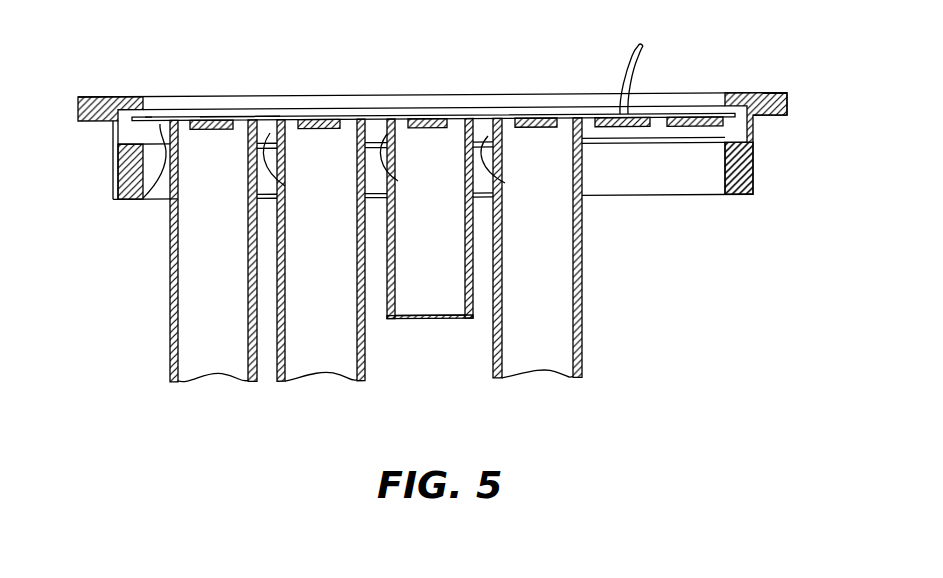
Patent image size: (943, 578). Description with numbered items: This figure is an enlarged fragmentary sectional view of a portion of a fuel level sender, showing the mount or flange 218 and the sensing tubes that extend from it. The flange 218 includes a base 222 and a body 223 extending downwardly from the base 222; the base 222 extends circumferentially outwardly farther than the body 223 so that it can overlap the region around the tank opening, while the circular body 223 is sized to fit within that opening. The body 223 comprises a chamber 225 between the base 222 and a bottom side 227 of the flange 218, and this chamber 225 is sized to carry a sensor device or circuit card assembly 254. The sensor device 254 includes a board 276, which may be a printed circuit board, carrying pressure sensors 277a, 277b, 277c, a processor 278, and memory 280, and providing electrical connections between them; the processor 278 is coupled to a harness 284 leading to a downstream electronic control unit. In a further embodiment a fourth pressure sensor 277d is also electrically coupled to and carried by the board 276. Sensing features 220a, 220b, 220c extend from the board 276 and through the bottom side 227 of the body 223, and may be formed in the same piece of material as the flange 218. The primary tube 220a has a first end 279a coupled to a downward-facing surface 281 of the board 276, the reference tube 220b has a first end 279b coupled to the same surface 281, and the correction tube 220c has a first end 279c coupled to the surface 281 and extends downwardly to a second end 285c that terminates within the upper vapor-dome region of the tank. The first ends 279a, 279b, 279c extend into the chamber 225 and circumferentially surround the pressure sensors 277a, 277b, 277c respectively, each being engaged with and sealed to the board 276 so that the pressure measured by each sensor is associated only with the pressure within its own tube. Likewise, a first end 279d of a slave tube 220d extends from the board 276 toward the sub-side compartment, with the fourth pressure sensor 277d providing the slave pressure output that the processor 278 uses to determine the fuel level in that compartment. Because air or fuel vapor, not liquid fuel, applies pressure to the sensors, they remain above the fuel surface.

The flange 218 is at (764, 90).
The primary tube 220a is at (170, 249).
The reference tube 220b is at (280, 383).
The correction tube 220c is at (392, 304).
The slave tube 220d is at (498, 378).
The base 222 is at (787, 106).
The body 223 is at (755, 170).
The chamber 225 is at (691, 137).
The bottom side 227 is at (142, 148).
The sensor device 254 is at (279, 104).
The board 276 is at (240, 118).
The first pressure sensor 277a is at (207, 133).
The second pressure sensor 277b is at (316, 133).
The third pressure sensor 277c is at (415, 127).
The fourth pressure sensor 277d is at (528, 126).
The processor 278 is at (606, 128).
The first end of primary tube 279a is at (143, 199).
The first end of reference tube 279b is at (285, 186).
The first end of correction tube 279c is at (398, 181).
The first end of slave tube 279d is at (505, 183).
The memory 280 is at (678, 130).
The downward-facing surface 281 is at (148, 128).
The harness 284 is at (637, 48).
The second end of correction tube 285c is at (470, 305).